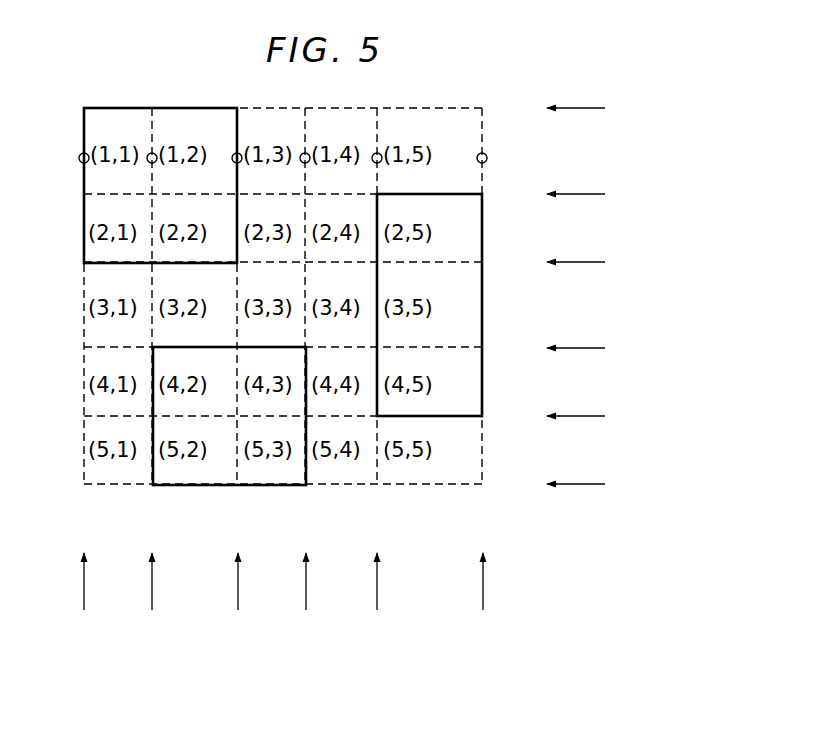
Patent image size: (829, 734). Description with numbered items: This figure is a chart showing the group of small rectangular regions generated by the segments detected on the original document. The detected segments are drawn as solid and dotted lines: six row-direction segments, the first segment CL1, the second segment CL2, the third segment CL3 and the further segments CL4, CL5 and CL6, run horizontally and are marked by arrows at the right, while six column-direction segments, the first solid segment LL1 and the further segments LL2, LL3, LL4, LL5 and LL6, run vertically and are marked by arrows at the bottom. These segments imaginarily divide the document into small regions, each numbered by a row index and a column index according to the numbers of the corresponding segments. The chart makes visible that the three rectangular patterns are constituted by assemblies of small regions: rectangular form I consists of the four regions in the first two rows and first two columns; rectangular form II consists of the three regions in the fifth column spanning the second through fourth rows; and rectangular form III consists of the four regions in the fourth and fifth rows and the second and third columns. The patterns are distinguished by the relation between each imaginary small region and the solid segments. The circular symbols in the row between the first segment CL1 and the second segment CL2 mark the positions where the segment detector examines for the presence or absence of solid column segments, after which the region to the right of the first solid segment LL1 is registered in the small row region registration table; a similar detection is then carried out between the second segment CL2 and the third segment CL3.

The rectangular form I is at (84, 180).
The rectangular form II is at (482, 288).
The rectangular form III is at (187, 485).
The first segment CL1 is at (598, 108).
The second segment CL2 is at (598, 194).
The third segment CL3 is at (598, 262).
The fourth row segment CL4 is at (598, 348).
The fifth row segment CL5 is at (598, 416).
The sixth row segment CL6 is at (598, 484).
The first solid segment LL1 is at (84, 606).
The second column segment LL2 is at (152, 606).
The third column segment LL3 is at (238, 606).
The fourth column segment LL4 is at (306, 606).
The fifth column segment LL5 is at (377, 606).
The sixth column segment LL6 is at (483, 606).